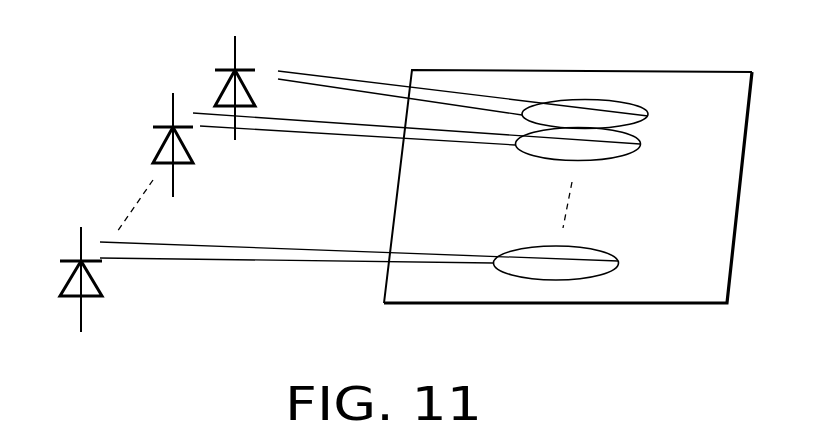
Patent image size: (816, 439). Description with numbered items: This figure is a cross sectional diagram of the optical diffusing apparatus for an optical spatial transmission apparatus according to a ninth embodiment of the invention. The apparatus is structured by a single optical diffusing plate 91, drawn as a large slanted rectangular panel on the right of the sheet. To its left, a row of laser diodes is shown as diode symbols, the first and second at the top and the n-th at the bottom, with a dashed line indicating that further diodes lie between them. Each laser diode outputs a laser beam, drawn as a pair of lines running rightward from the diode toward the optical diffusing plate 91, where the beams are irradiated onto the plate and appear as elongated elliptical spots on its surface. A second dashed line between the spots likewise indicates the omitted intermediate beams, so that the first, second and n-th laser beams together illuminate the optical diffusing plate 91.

The optical diffusing plate 91 is at (677, 305).